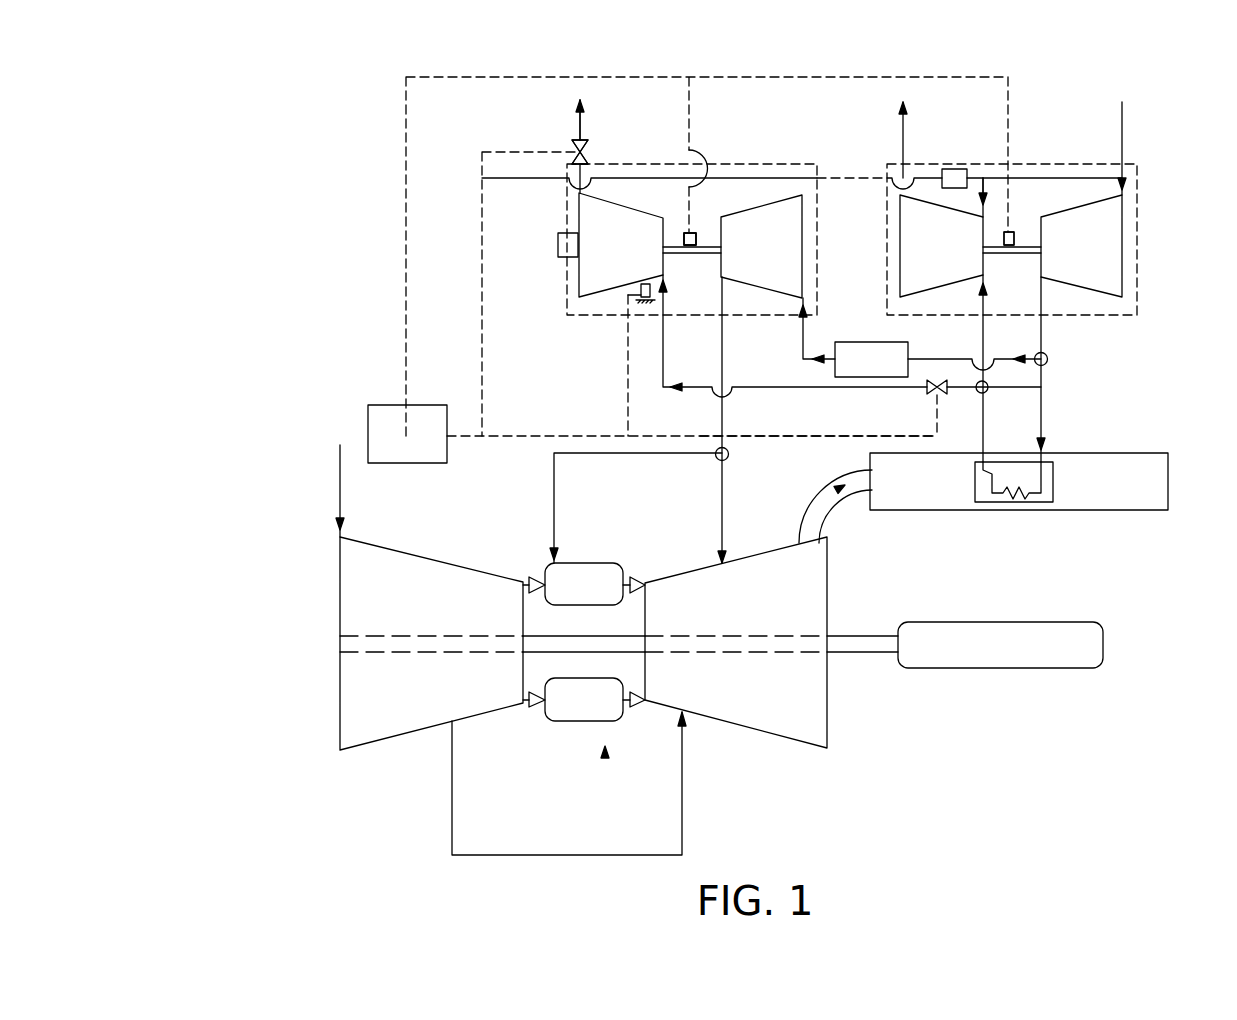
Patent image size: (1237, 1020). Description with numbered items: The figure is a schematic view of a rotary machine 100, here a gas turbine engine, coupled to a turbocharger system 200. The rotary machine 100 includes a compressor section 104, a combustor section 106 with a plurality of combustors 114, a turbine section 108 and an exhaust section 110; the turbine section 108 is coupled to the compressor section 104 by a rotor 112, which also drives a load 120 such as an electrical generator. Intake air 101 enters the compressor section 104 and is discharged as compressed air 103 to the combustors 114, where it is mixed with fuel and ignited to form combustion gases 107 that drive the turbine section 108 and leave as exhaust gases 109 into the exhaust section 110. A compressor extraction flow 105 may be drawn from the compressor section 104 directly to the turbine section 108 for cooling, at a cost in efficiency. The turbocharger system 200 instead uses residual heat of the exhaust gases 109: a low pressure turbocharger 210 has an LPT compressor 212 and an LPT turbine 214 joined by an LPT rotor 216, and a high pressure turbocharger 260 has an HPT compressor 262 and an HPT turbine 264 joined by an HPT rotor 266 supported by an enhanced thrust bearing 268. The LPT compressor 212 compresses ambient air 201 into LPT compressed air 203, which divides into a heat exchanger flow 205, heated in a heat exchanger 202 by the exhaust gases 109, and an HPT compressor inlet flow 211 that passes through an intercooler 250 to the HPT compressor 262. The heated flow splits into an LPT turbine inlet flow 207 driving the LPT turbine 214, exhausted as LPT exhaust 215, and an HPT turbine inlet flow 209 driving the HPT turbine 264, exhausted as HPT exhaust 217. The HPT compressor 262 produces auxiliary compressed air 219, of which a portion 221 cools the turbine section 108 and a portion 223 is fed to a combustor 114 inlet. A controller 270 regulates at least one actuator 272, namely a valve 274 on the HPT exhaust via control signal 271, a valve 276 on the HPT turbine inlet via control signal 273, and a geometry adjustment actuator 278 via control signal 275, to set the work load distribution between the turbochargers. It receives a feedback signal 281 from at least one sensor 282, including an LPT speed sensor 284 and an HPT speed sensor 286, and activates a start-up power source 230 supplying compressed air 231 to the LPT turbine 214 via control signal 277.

The rotary machine 100 is at (278, 691).
The intake air 101 is at (338, 470).
The compressed air 103 is at (527, 583).
The compressor section 104 is at (373, 745).
The compressor extraction flow 105 is at (494, 855).
The combustor section 106 is at (605, 760).
The combustion gases 107 is at (634, 578).
The turbine section 108 is at (763, 733).
The exhaust gases 109 is at (814, 500).
The exhaust section 110 is at (952, 510).
The rotor 112 is at (543, 637).
The combustors 114 is at (589, 563).
The load 120 is at (1028, 668).
The turbocharger system 200 is at (278, 249).
The ambient air 201 is at (1123, 124).
The heat exchanger 202 is at (1030, 502).
The LPT compressed air 203 is at (1043, 295).
The heat exchanger flow 205 is at (1047, 368).
The LPT turbine inlet flow 207 is at (985, 308).
The HPT turbine inlet flow 209 is at (812, 390).
The low pressure turbocharger (LPT) 210 is at (1137, 240).
The HPT compressor inlet flow 211 is at (803, 340).
The LPT compressor 212 is at (1106, 257).
The LPT turbine 214 is at (963, 257).
The LPT exhaust 215 is at (902, 134).
The LPT rotor 216 is at (1032, 243).
The HPT exhaust 217 is at (585, 130).
The auxiliary compressed air 219 is at (724, 360).
The portion of auxiliary compressed air 221 is at (723, 516).
The portion of auxiliary compressed air 223 is at (555, 486).
The start-up power source 230 is at (946, 169).
The compressed air 231 is at (986, 180).
The intercooler 250 is at (890, 373).
The high pressure turbocharger (HPT) 260 is at (737, 165).
The HPT compressor 262 is at (785, 257).
The HPT turbine 264 is at (641, 257).
The HPT rotor 266 is at (688, 250).
The enhanced thrust bearing 268 is at (556, 250).
The controller 270 is at (386, 448).
The control signal 271 is at (490, 152).
The actuator 272 is at (514, 97).
The control signal 273 is at (774, 437).
The valve 274 is at (578, 148).
The control signal 275 is at (627, 395).
The valve 276 is at (948, 390).
The control signal 277 is at (520, 180).
The geometry adjustment actuator 278 is at (643, 283).
The feedback signal 281 is at (406, 180).
The sensor 282 is at (650, 137).
The LPT speed sensor 284 is at (1010, 232).
The HPT speed sensor 286 is at (690, 232).